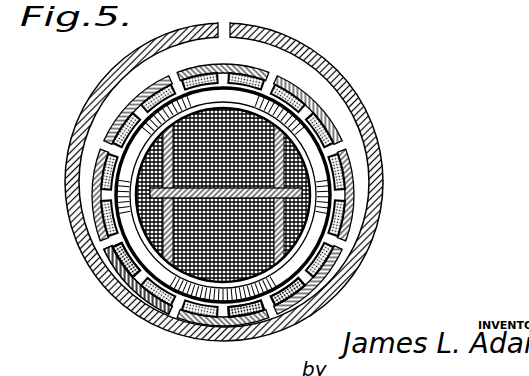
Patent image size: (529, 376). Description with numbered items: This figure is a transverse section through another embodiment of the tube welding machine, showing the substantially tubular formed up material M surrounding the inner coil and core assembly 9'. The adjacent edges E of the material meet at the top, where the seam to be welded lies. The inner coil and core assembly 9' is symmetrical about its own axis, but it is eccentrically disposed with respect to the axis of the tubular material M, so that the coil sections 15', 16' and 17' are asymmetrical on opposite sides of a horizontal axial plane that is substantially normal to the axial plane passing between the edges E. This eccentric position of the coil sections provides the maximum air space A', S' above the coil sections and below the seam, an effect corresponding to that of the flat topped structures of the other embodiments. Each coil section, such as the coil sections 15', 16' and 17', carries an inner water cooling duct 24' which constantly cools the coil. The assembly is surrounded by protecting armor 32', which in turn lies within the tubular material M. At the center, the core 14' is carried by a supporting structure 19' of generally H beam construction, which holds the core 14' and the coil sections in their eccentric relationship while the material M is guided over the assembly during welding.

The adjacent edges E is at (225, 29).
The tubular formed up material M is at (300, 52).
The air space A' is at (223, 165).
The air space S' is at (223, 179).
The inner coil and core assembly 9' is at (231, 191).
The core 14' is at (170, 195).
The supporting structure 19' is at (187, 198).
The water cooling duct 24' is at (102, 269).
The protecting armor 32' is at (126, 287).
The coil section 15' is at (223, 225).
The coil section 16' is at (245, 335).
The coil section 17' is at (310, 303).